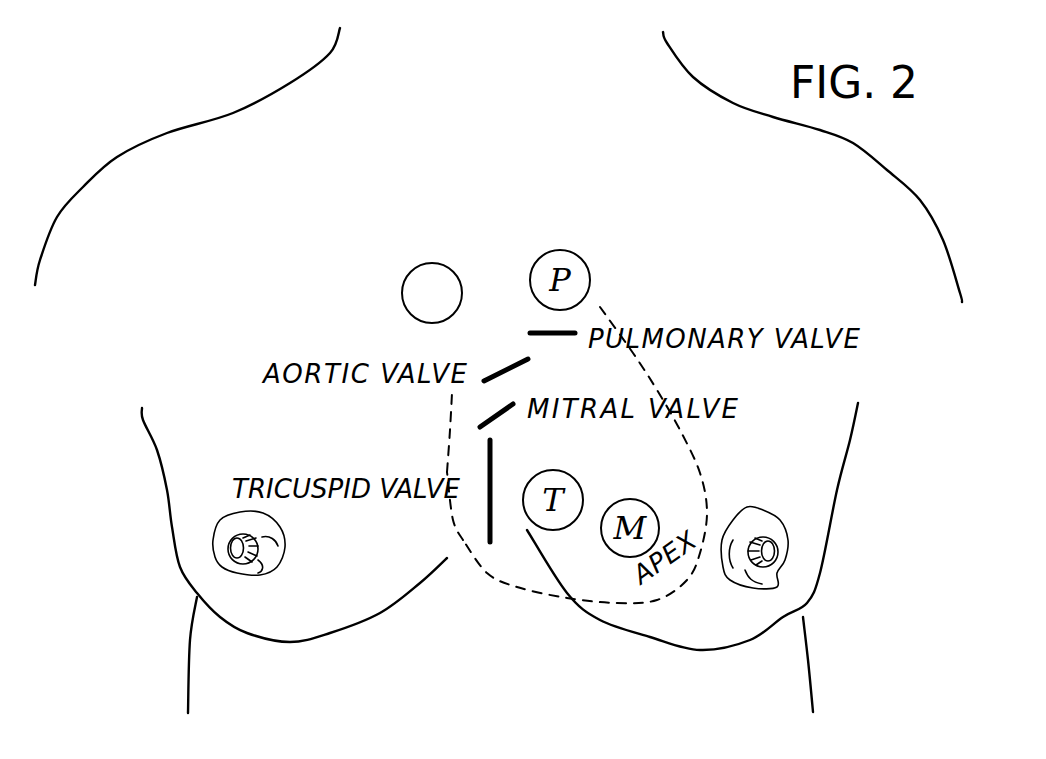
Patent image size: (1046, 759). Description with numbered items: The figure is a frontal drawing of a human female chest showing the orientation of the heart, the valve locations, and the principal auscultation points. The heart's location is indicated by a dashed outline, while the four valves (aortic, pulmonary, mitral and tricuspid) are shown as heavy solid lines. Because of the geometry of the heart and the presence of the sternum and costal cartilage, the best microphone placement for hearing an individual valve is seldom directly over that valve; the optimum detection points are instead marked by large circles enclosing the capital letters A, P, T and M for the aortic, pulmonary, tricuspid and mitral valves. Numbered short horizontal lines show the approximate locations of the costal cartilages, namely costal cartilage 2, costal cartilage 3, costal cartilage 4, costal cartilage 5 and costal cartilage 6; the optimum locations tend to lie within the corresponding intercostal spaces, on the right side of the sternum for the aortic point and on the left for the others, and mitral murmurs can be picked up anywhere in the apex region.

The costal cartilage No. 2 is at (457, 258).
The costal cartilage No. 3 is at (457, 330).
The costal cartilage No. 4 is at (448, 420).
The costal cartilage No. 5 is at (447, 472).
The costal cartilage No. 6 is at (460, 542).